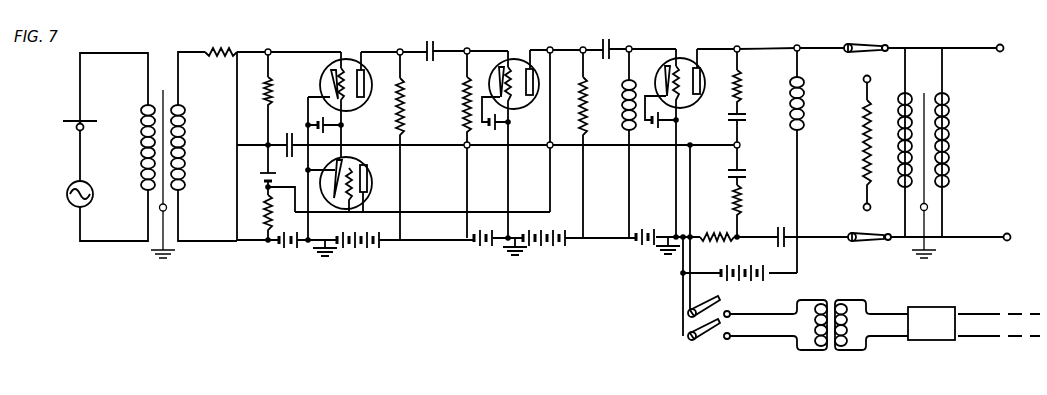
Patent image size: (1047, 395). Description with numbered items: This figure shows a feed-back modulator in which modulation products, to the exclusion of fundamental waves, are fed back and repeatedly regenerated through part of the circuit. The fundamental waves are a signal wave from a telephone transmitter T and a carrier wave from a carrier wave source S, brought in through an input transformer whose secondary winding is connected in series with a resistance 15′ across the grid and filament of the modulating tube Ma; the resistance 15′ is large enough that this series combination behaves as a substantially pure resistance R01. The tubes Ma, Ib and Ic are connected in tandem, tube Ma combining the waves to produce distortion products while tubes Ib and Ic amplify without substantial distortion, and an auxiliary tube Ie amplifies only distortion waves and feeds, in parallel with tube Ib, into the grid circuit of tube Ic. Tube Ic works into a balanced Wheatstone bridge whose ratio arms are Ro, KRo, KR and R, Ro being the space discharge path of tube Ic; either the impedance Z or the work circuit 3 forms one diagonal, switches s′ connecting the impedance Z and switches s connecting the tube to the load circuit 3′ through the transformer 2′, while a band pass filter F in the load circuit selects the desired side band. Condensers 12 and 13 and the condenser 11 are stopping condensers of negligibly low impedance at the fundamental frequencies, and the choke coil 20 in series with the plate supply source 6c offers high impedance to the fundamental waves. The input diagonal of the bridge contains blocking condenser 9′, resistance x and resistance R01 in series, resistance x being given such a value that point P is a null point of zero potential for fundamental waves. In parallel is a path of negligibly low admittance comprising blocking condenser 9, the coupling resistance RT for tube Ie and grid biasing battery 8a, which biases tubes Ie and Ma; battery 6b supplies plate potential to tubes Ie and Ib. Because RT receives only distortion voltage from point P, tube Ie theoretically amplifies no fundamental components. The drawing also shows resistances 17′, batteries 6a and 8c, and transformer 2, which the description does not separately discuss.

The telephone transmitter T is at (88, 120).
The carrier wave source S is at (91, 200).
The resistance 15′ is at (225, 50).
The resistance x is at (278, 112).
The pure resistance R01 is at (234, 142).
The blocking condenser 9′ is at (289, 133).
The blocking condenser 9 is at (262, 174).
The input or coupling resistance RT is at (264, 205).
The modulating tube Ma is at (333, 72).
The auxiliary tube Ie is at (357, 207).
The resistor 17′ is at (398, 113).
The grid biasing battery 8a is at (292, 250).
The battery 6a is at (362, 250).
The amplifying tube Ib is at (503, 72).
The plate battery 6b is at (556, 248).
The amplifying tube Ic is at (668, 70).
The bridge ratio arm Ro is at (684, 104).
The bridge ratio arm R is at (747, 81).
The stopping condenser 12 is at (748, 118).
The null point P is at (742, 145).
The stopping condenser 13 is at (748, 175).
The bridge ratio arm KR is at (745, 202).
The bridge ratio arm KRo is at (716, 232).
The stopping condenser 11 is at (779, 232).
The battery 8c is at (646, 247).
The plate voltage supply source 6c is at (752, 283).
The choke coil 20 is at (803, 96).
The switches s′ is at (865, 44).
The impedance Z is at (862, 128).
The output transformer 2 is at (920, 90).
The work circuit 3 is at (972, 237).
The switches s is at (694, 343).
The transformer 2′ is at (831, 352).
The load circuit 3′ is at (895, 312).
The band pass filter F is at (933, 342).